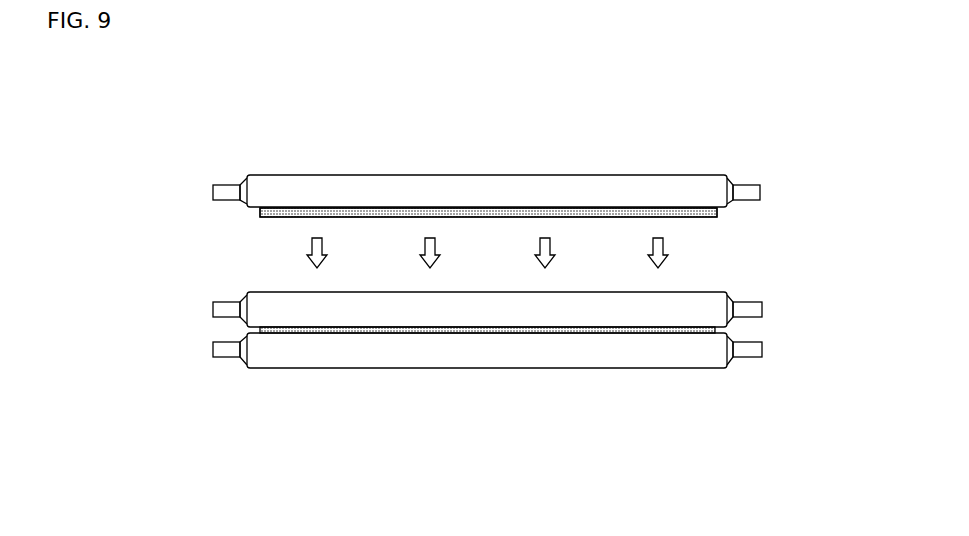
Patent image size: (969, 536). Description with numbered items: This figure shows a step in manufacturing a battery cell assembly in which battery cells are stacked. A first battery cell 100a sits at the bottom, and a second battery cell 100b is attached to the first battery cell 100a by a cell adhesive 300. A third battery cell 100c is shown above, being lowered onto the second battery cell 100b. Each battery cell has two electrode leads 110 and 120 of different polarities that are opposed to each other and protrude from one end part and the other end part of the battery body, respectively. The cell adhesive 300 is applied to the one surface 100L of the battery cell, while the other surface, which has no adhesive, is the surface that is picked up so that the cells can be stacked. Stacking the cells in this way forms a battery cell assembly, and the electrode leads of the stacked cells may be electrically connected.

The first battery cell 100a is at (261, 383).
The second battery cell 100b is at (241, 284).
The third battery cell 100c is at (284, 163).
The one surface of the battery cell 100L is at (722, 211).
The electrode lead 110 is at (213, 188).
The electrode lead 120 is at (761, 192).
The cell adhesive 300 is at (498, 207).